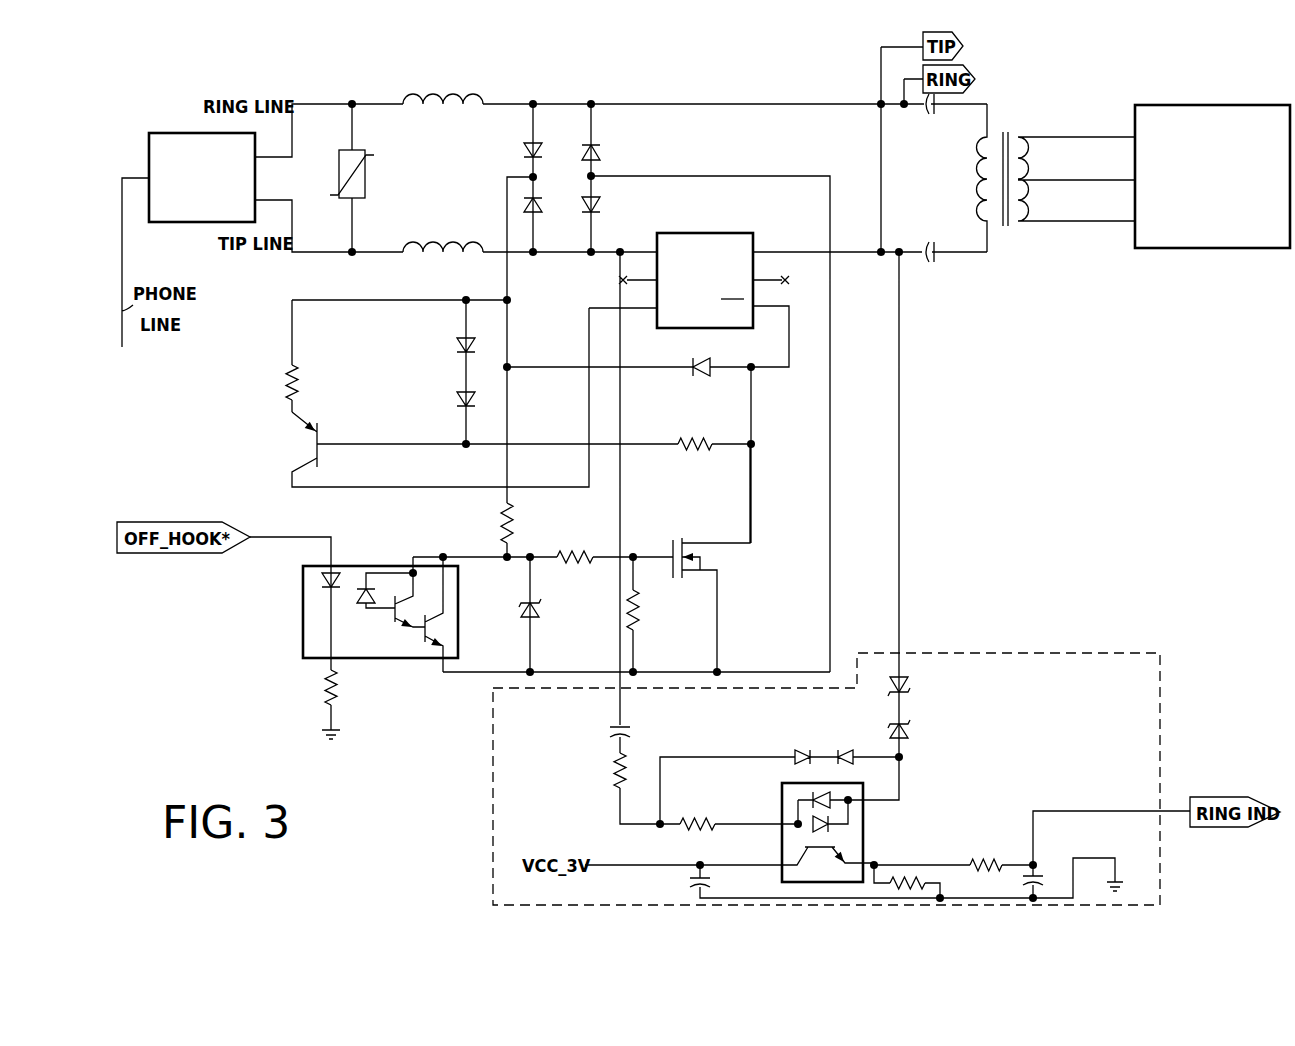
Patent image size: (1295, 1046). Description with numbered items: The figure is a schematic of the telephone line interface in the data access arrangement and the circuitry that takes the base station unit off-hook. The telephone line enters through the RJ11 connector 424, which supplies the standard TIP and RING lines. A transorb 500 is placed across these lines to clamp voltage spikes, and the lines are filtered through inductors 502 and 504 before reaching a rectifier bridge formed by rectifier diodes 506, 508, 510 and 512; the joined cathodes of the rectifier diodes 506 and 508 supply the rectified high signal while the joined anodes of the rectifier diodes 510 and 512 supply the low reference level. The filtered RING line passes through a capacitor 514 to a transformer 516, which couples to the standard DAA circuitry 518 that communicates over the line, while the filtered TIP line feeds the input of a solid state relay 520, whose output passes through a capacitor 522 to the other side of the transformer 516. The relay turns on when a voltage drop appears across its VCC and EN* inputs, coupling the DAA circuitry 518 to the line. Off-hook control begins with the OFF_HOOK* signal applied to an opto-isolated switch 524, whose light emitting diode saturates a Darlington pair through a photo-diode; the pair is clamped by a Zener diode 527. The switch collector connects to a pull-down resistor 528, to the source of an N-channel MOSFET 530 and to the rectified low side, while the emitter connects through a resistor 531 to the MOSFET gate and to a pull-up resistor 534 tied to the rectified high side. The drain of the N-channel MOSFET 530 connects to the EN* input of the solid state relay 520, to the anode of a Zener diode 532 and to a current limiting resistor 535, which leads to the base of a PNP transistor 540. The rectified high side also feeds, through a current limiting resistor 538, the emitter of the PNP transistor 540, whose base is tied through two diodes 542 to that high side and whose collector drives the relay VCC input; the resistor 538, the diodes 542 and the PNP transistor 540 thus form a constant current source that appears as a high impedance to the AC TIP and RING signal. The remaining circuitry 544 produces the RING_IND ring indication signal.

The RJ11 connector 424 is at (190, 132).
The transorb 500 is at (365, 192).
The inductor 502 is at (440, 100).
The inductor 504 is at (455, 243).
The rectifier diode 506 is at (524, 153).
The rectifier diode 508 is at (524, 205).
The rectifier diode 510 is at (600, 152).
The rectifier diode 512 is at (600, 206).
The capacitor 514 is at (929, 116).
The transformer 516 is at (1004, 227).
The DAA circuitry 518 is at (1218, 249).
The solid state relay 520 is at (697, 233).
The capacitor 522 is at (929, 250).
The opto-isolated switch 524 is at (430, 662).
The Zener diode 527 is at (540, 612).
The pull-down resistor 528 is at (645, 612).
The N-channel MOSFET 530 is at (705, 558).
The resistor 531 is at (575, 550).
The Zener diode 532 is at (694, 378).
The pull-up resistor 534 is at (500, 530).
The current limiting resistor 535 is at (695, 452).
The current limiting resistor 538 is at (288, 380).
The PNP transistor 540 is at (300, 452).
The diodes 542 is at (457, 400).
The remaining circuitry 544 is at (1086, 652).